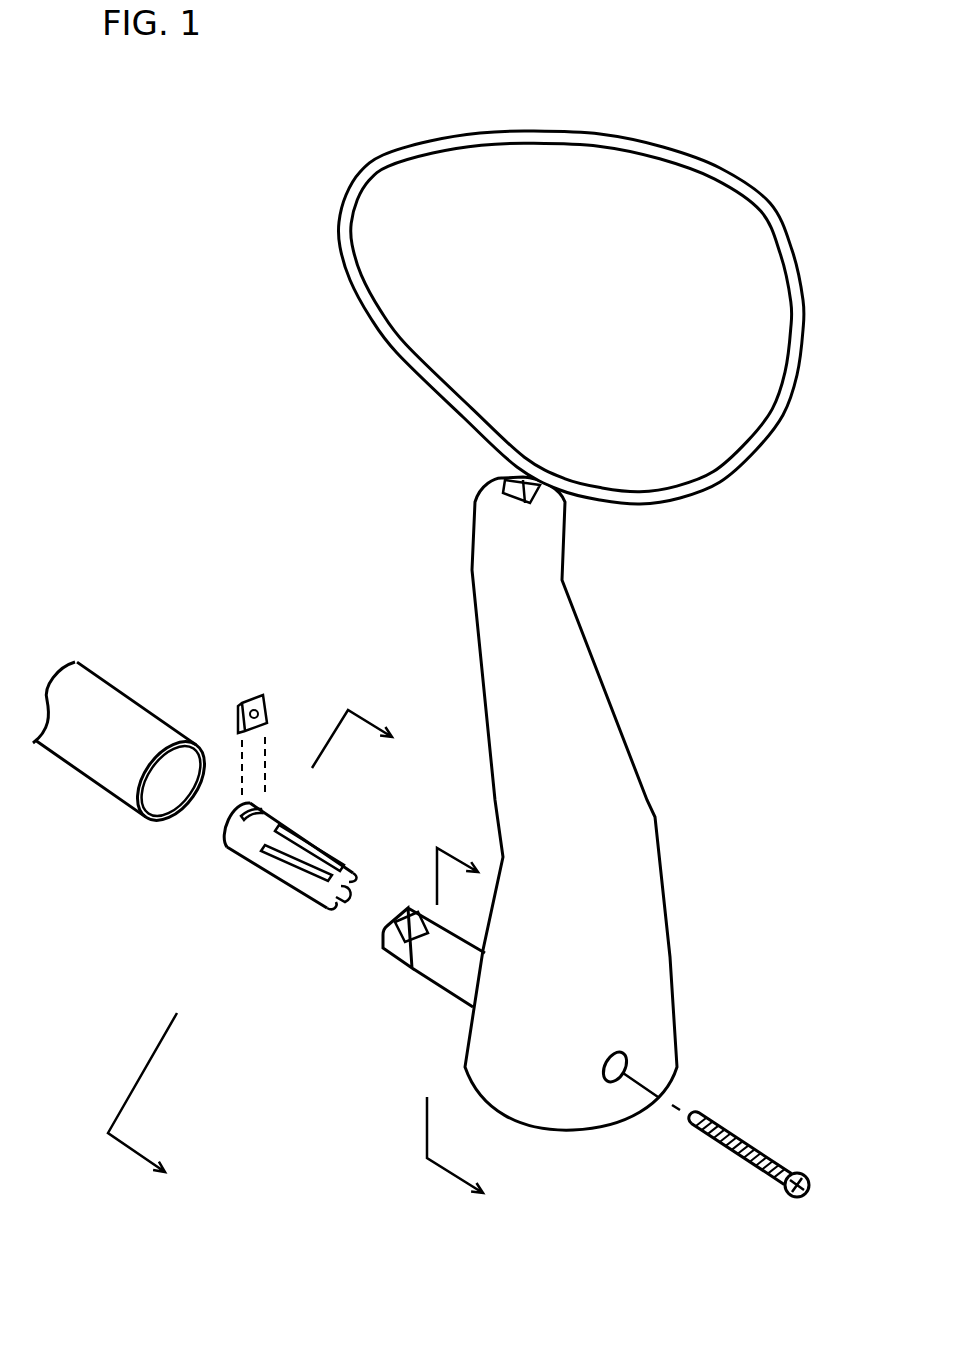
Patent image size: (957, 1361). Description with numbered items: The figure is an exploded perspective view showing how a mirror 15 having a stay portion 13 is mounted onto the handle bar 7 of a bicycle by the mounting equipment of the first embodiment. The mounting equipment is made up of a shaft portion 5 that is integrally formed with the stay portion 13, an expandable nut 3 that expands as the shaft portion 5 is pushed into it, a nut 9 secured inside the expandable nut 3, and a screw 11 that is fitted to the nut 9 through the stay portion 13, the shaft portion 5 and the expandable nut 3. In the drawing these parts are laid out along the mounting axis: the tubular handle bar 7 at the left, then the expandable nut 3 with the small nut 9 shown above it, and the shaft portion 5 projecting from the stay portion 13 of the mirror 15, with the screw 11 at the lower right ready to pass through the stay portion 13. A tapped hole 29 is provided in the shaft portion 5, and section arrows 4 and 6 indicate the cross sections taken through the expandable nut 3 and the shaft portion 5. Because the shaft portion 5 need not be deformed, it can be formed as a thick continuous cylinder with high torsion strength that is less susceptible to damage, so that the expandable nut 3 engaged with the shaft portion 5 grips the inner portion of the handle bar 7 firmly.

The expandable nut 3 is at (277, 892).
The section line 4- 4 is at (250, 956).
The shaft portion 5 is at (405, 972).
The line 6— 6 is at (455, 1009).
The handle bar 7 is at (105, 793).
The nut 9 is at (277, 712).
The screw 11 is at (745, 1130).
The stay portion 13 is at (610, 763).
The mirror 15 is at (742, 238).
The tapped hole 29 is at (625, 1057).